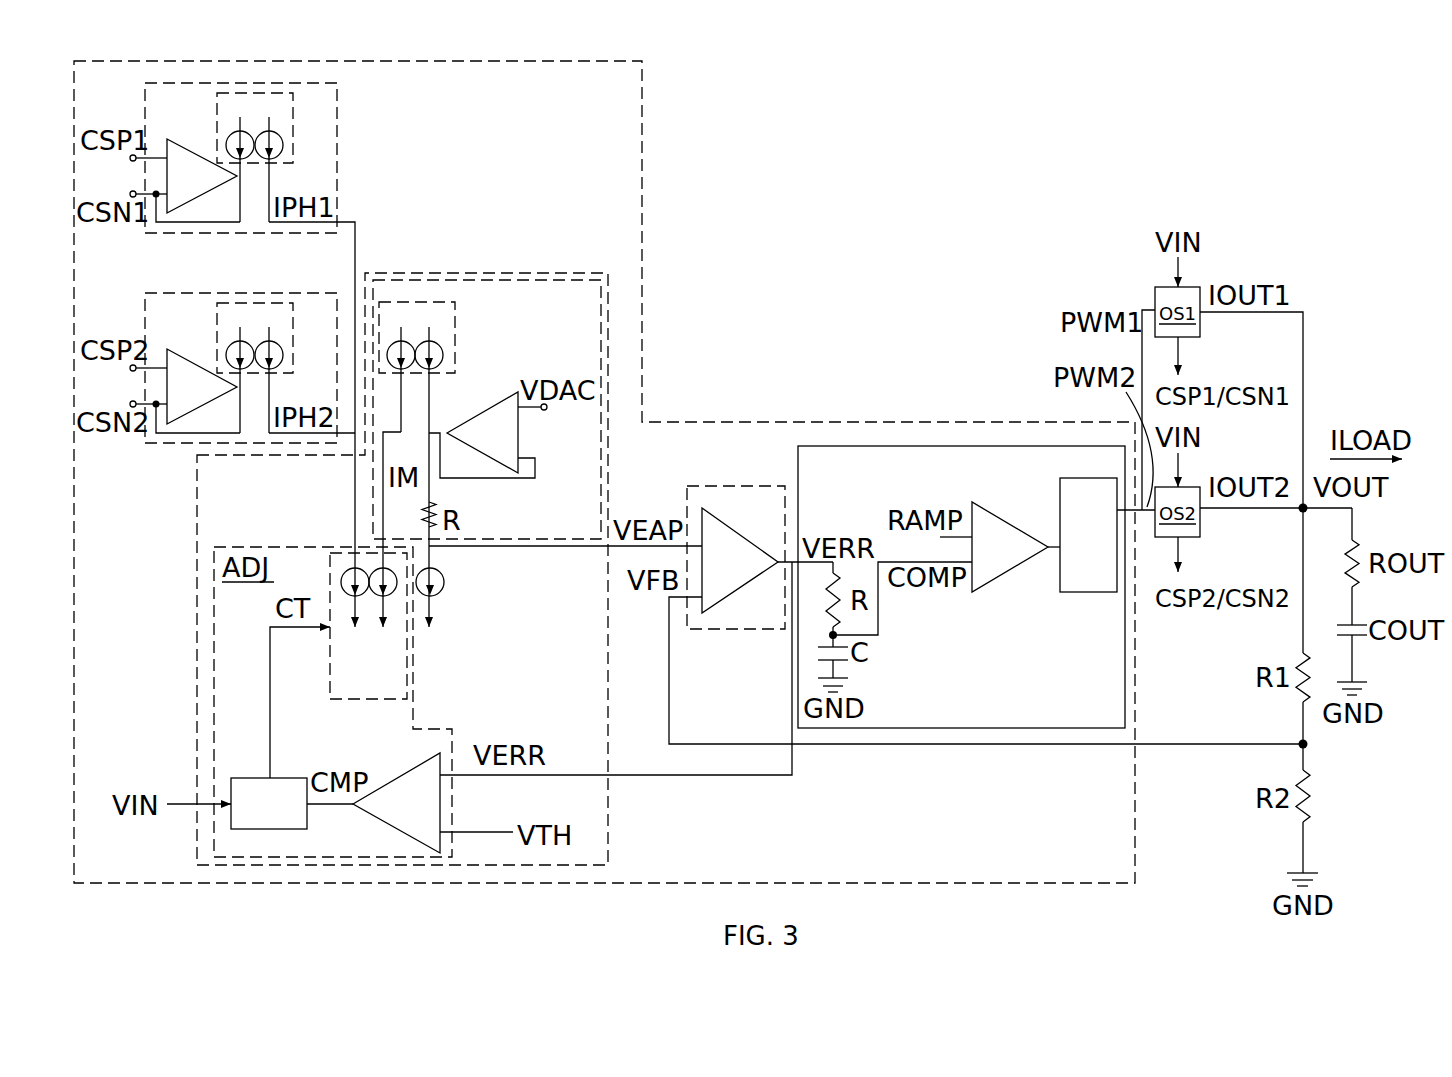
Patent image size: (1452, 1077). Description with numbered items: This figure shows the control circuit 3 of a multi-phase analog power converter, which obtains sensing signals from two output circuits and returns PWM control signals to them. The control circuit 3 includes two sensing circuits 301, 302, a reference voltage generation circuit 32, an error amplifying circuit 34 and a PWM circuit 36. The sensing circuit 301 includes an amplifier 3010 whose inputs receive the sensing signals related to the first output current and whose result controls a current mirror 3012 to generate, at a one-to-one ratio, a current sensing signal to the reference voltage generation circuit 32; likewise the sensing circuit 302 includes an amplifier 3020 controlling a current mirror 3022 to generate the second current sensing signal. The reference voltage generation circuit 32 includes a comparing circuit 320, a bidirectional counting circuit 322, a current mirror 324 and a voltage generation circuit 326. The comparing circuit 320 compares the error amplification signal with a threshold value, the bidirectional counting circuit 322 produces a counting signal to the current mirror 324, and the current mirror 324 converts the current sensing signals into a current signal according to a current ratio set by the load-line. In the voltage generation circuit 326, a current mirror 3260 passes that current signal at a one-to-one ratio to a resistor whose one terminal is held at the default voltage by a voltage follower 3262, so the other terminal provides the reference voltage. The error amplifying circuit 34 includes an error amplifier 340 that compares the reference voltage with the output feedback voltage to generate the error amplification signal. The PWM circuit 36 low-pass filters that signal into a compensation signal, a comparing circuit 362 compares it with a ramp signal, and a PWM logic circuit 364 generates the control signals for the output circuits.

The control circuit 3 is at (625, 105).
The sensing circuit 301 is at (197, 113).
The amplifier 3010 is at (212, 185).
The current mirror 3012 is at (293, 112).
The sensing circuit 302 is at (197, 323).
The amplifier 3020 is at (212, 396).
The current mirror 3022 is at (240, 303).
The reference voltage generation circuit 32 is at (238, 490).
The comparing circuit 320 is at (431, 818).
The bidirectional counting circuit 322 is at (292, 818).
The current mirror 324 is at (392, 692).
The voltage generation circuit 326 is at (589, 313).
The current mirror 3260 is at (455, 318).
The voltage follower 3262 is at (510, 446).
The error amplifying circuit 34 is at (778, 518).
The error amplifier 340 is at (756, 577).
The PWM circuit 36 is at (838, 485).
The comparing circuit 362 is at (1025, 562).
The PWM logic circuit 364 is at (1111, 560).